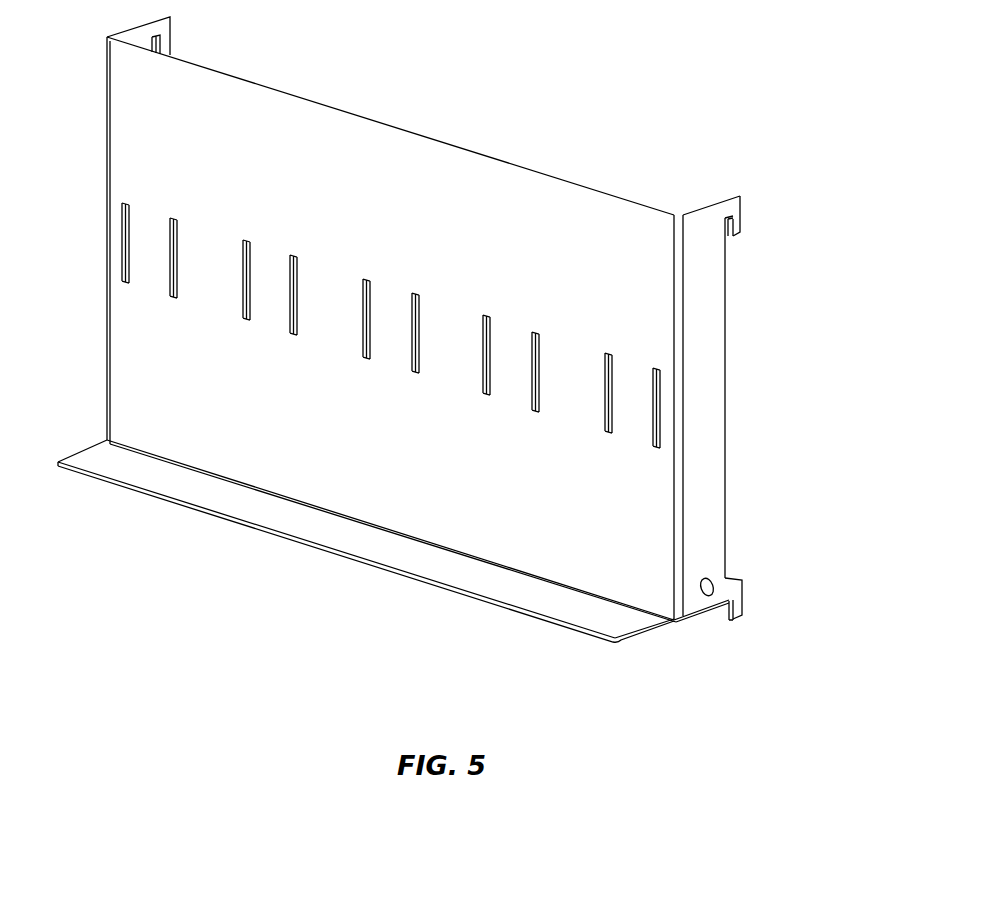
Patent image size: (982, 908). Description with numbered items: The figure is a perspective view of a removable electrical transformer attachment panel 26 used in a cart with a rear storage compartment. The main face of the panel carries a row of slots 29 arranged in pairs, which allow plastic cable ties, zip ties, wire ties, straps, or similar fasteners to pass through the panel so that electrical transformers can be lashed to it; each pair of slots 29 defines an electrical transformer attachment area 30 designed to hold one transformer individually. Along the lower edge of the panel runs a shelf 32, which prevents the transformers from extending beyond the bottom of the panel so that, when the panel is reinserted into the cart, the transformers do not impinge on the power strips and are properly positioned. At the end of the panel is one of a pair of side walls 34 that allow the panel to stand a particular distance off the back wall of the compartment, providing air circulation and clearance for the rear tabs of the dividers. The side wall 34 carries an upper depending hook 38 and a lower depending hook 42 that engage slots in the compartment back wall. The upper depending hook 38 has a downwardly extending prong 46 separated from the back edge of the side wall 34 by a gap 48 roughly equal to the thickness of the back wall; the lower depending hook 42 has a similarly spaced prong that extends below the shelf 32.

The electrical transformer attachment panel 26 is at (444, 354).
The slots 29 is at (655, 412).
The electrical transformer attachment areas 30 is at (634, 415).
The shelf 32 is at (572, 601).
The side walls 34 is at (752, 427).
The upper depending hook 38 is at (748, 212).
The lower depending hook 42 is at (750, 610).
The downwardly extending prong 46 is at (735, 232).
The gap 48 is at (727, 240).